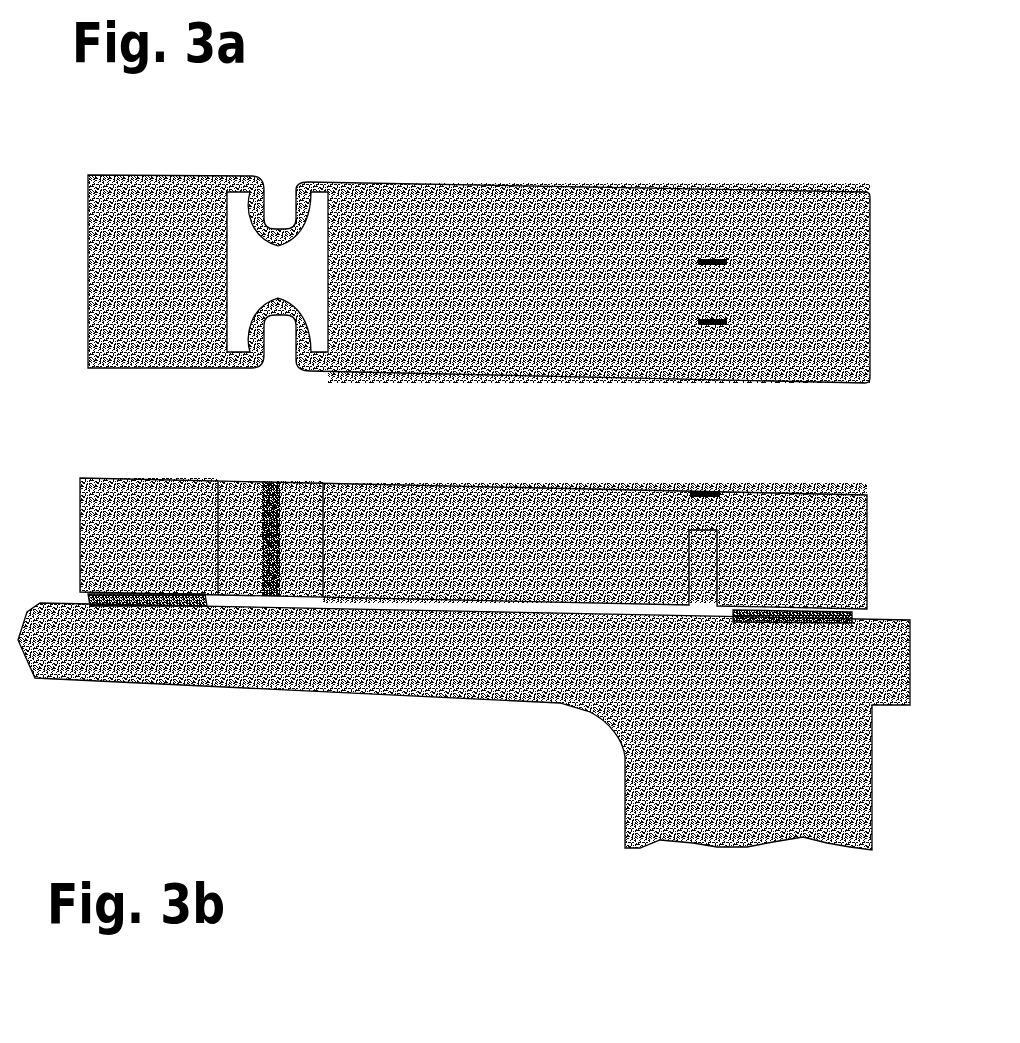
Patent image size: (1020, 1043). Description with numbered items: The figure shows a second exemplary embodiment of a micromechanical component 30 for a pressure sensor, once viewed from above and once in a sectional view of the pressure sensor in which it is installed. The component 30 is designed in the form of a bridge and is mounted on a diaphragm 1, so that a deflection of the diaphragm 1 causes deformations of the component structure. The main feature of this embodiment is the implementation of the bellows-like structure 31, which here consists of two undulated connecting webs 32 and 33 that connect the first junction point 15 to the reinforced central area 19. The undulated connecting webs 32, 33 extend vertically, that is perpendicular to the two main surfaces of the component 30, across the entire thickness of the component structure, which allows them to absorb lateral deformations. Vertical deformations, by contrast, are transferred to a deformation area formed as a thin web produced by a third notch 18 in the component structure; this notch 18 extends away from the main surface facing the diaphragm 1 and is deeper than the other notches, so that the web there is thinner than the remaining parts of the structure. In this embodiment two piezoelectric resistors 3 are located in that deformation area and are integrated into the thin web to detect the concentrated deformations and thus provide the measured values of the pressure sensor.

In FIG. 3b, the diaphragm 1 is at (370, 680).
In FIG. 3a, the piezoelectric resistor 3 is at (747, 365).
In FIG. 3b, the piezoelectric resistor 3 is at (712, 488).
In FIG. 3a, the first junction point 15 is at (138, 357).
In FIG. 3b, the first junction point 15 is at (137, 490).
In FIG. 3a, the third notch 18 is at (655, 422).
In FIG. 3b, the third notch 18 is at (697, 543).
In FIG. 3a, the reinforced central area 19 is at (487, 357).
In FIG. 3b, the reinforced central area 19 is at (488, 498).
In FIG. 3a, the micromechanical component 30 is at (479, 246).
In FIG. 3a, the bellows-like structure 31 is at (277, 284).
In FIG. 3b, the bellows-like structure 31 is at (270, 478).
In FIG. 3a, the undulated connecting web 32 is at (257, 199).
In FIG. 3a, the undulated connecting web 33 is at (260, 307).